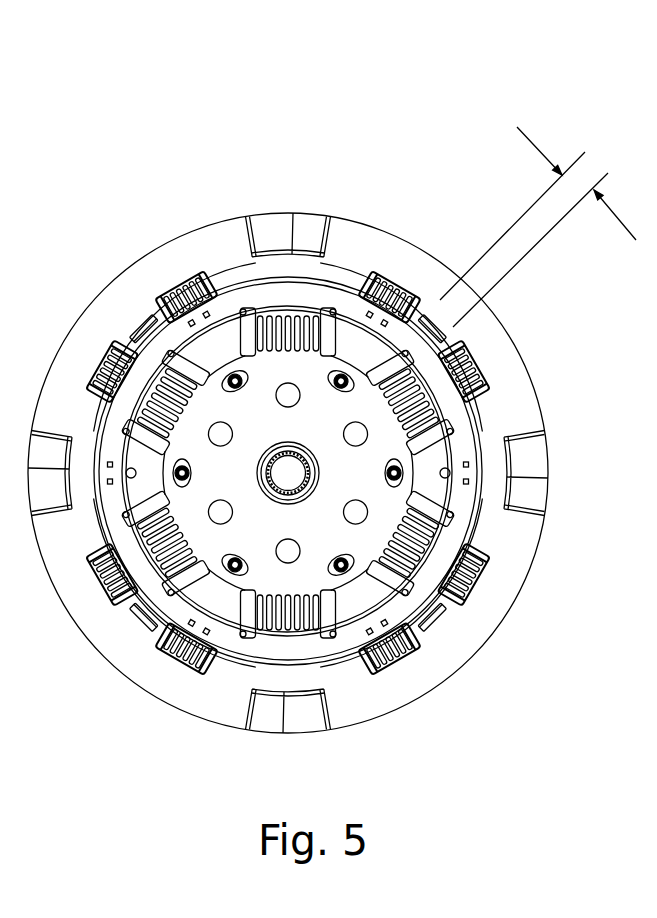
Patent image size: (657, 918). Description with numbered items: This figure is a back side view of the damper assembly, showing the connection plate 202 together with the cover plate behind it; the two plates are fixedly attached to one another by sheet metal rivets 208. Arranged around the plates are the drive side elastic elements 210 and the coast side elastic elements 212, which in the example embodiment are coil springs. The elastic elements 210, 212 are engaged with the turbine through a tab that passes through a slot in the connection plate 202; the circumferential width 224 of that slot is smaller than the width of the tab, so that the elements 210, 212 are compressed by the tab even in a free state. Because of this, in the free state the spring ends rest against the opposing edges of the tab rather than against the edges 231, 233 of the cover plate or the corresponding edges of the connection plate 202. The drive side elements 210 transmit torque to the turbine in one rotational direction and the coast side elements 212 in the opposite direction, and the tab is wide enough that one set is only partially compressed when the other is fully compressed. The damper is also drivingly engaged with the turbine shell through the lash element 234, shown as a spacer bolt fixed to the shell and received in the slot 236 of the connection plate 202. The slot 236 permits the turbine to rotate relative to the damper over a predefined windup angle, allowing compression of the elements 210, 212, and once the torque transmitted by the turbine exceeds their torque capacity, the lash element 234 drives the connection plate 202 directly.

The connection plate 202 is at (239, 251).
The sheet metal rivets 208 is at (113, 455).
The drive side elastic elements 210 is at (412, 288).
The coast side elastic elements 212 is at (473, 357).
The circumferential width of slot 224 is at (540, 140).
The edge of cover plate 231 is at (427, 324).
The edge of cover plate 233 is at (432, 320).
The lash element 234 is at (341, 383).
The slot 236 is at (320, 388).